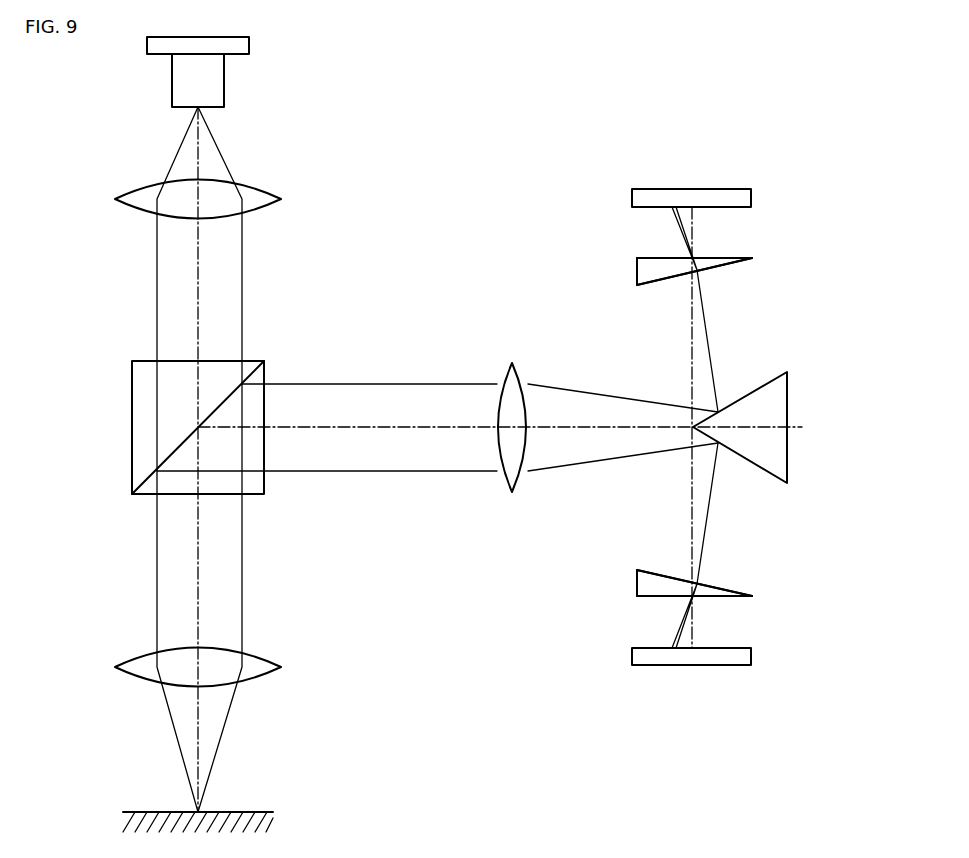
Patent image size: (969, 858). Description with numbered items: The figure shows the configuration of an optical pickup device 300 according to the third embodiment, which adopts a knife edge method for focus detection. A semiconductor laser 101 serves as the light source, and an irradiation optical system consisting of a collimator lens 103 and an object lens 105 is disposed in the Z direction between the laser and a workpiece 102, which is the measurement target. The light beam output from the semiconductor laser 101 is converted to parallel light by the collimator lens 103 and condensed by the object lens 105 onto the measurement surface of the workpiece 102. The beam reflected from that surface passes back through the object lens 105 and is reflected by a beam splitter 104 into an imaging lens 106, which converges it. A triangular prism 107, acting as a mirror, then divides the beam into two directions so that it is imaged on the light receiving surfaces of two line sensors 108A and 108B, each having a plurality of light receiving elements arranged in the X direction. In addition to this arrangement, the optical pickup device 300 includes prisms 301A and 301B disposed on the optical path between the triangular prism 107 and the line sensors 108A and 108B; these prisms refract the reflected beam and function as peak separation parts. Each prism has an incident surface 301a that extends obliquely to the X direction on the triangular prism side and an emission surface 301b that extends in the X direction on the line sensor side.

The semiconductor laser 101 is at (249, 45).
The workpiece 102 is at (270, 818).
The collimator lens 103 is at (281, 199).
The beam splitter 104 is at (132, 420).
The object lens 105 is at (281, 667).
The imaging lens 106 is at (512, 363).
The triangular prism 107 is at (787, 408).
The line sensor 108A is at (751, 198).
The line sensor 108B is at (751, 657).
The optical pickup device 300 is at (480, 110).
The prism 301A is at (735, 262).
The prism 301B is at (735, 592).
The incident surface 301a is at (640, 285).
The emission surface 301b is at (640, 258).